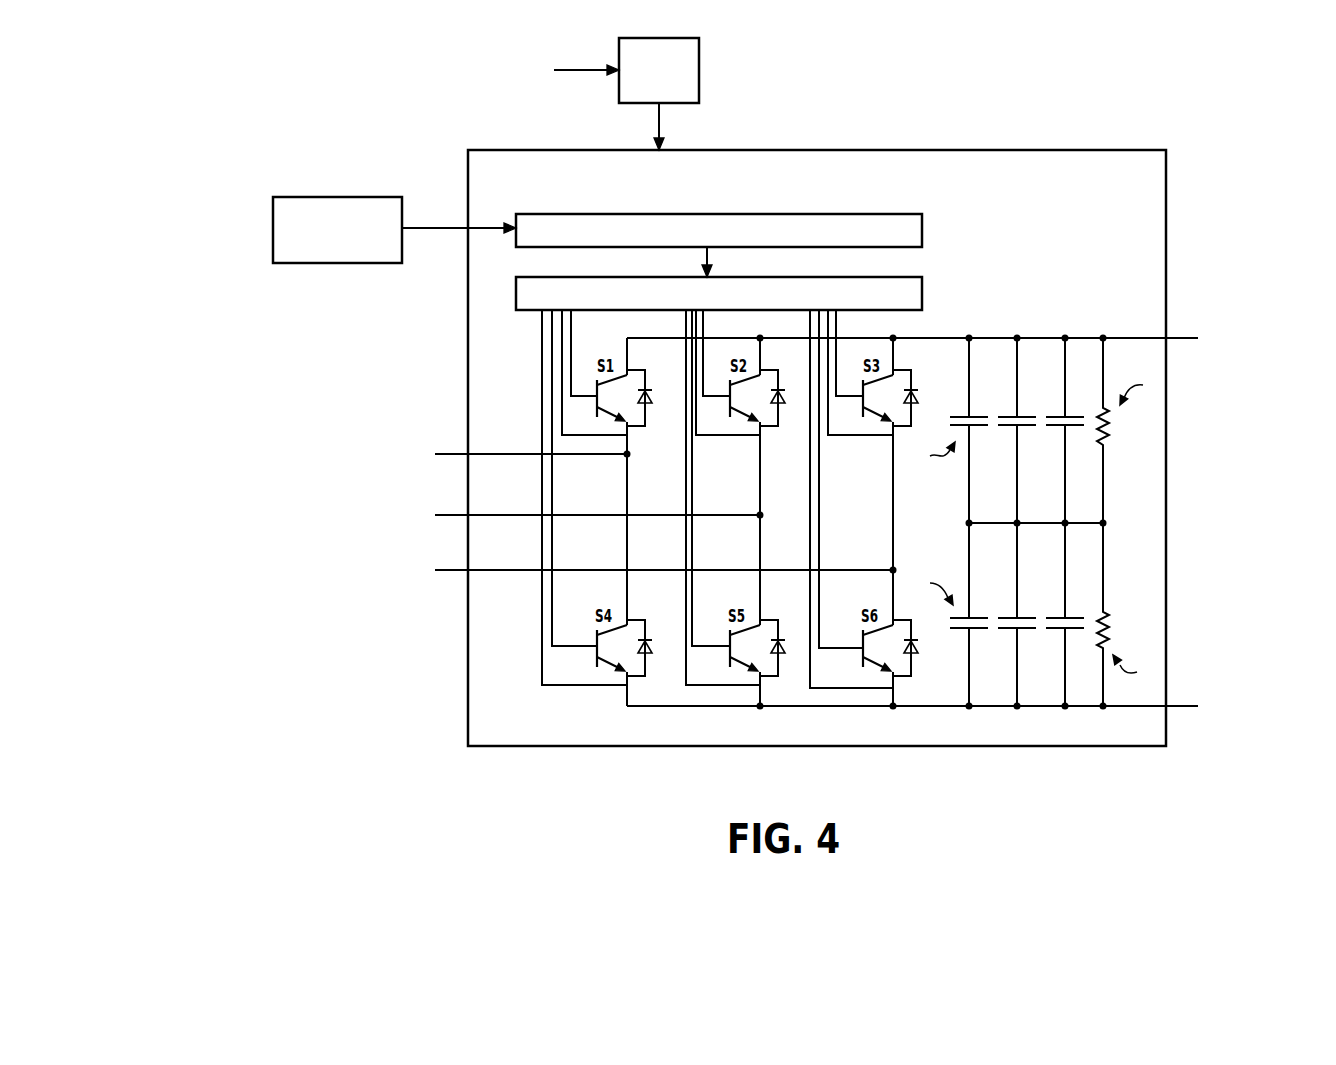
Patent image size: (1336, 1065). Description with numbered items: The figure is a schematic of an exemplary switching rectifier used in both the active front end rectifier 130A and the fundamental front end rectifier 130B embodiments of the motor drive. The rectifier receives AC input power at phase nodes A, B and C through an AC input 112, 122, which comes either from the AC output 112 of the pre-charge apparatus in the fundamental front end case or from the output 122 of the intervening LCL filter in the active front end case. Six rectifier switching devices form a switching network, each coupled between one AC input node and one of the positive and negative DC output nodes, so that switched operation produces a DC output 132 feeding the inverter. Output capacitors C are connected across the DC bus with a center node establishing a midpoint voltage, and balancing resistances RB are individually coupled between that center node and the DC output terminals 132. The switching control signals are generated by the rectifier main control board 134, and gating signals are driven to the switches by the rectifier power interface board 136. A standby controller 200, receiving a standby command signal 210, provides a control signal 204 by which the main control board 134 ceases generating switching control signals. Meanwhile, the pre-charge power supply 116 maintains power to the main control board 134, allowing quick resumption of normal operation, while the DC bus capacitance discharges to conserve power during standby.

The standby controller 200 is at (652, 38).
The standby command signal 210 is at (588, 69).
The control signal 204 is at (657, 128).
The active front end rectifier 130A is at (784, 435).
The fundamental front end rectifier 130B is at (500, 150).
The pre-charge power supply 116 is at (335, 197).
The rectifier main control board 134 is at (530, 214).
The rectifier power interface board 136 is at (530, 277).
The DC output 132 is at (1201, 300).
The AC output of the pre-charge apparatus 112 is at (535, 489).
The output of the LCL filter 122 is at (429, 418).